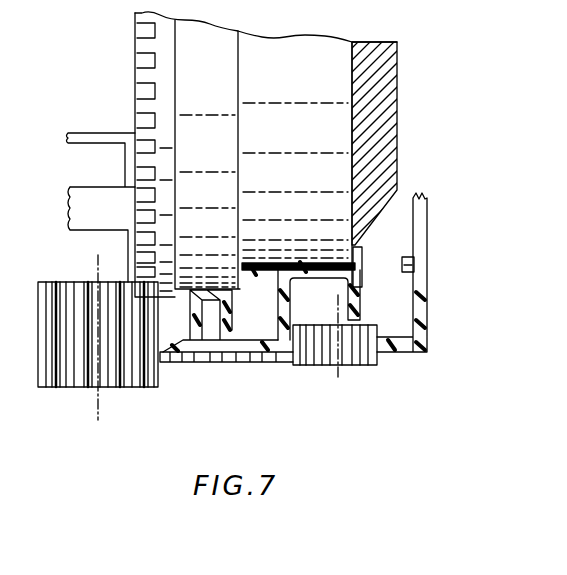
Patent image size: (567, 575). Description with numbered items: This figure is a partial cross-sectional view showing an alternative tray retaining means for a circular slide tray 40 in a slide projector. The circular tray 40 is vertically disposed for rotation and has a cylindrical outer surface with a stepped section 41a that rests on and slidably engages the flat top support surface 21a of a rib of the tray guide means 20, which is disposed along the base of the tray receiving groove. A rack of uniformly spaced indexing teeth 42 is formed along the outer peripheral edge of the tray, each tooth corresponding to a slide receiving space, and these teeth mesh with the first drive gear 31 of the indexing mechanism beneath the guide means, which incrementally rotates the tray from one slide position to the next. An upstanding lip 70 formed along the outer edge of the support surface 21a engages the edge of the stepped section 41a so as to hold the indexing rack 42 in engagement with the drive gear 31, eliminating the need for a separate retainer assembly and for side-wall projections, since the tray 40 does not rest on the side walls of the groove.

The circular slide tray 40 is at (287, 148).
The stepped section 41a is at (365, 165).
The rack of indexing teeth 42 is at (140, 118).
The top surface of rib 21a is at (325, 272).
The lip 70 is at (358, 259).
The tray guide means 20 is at (368, 298).
The first drive gear 31 is at (113, 388).